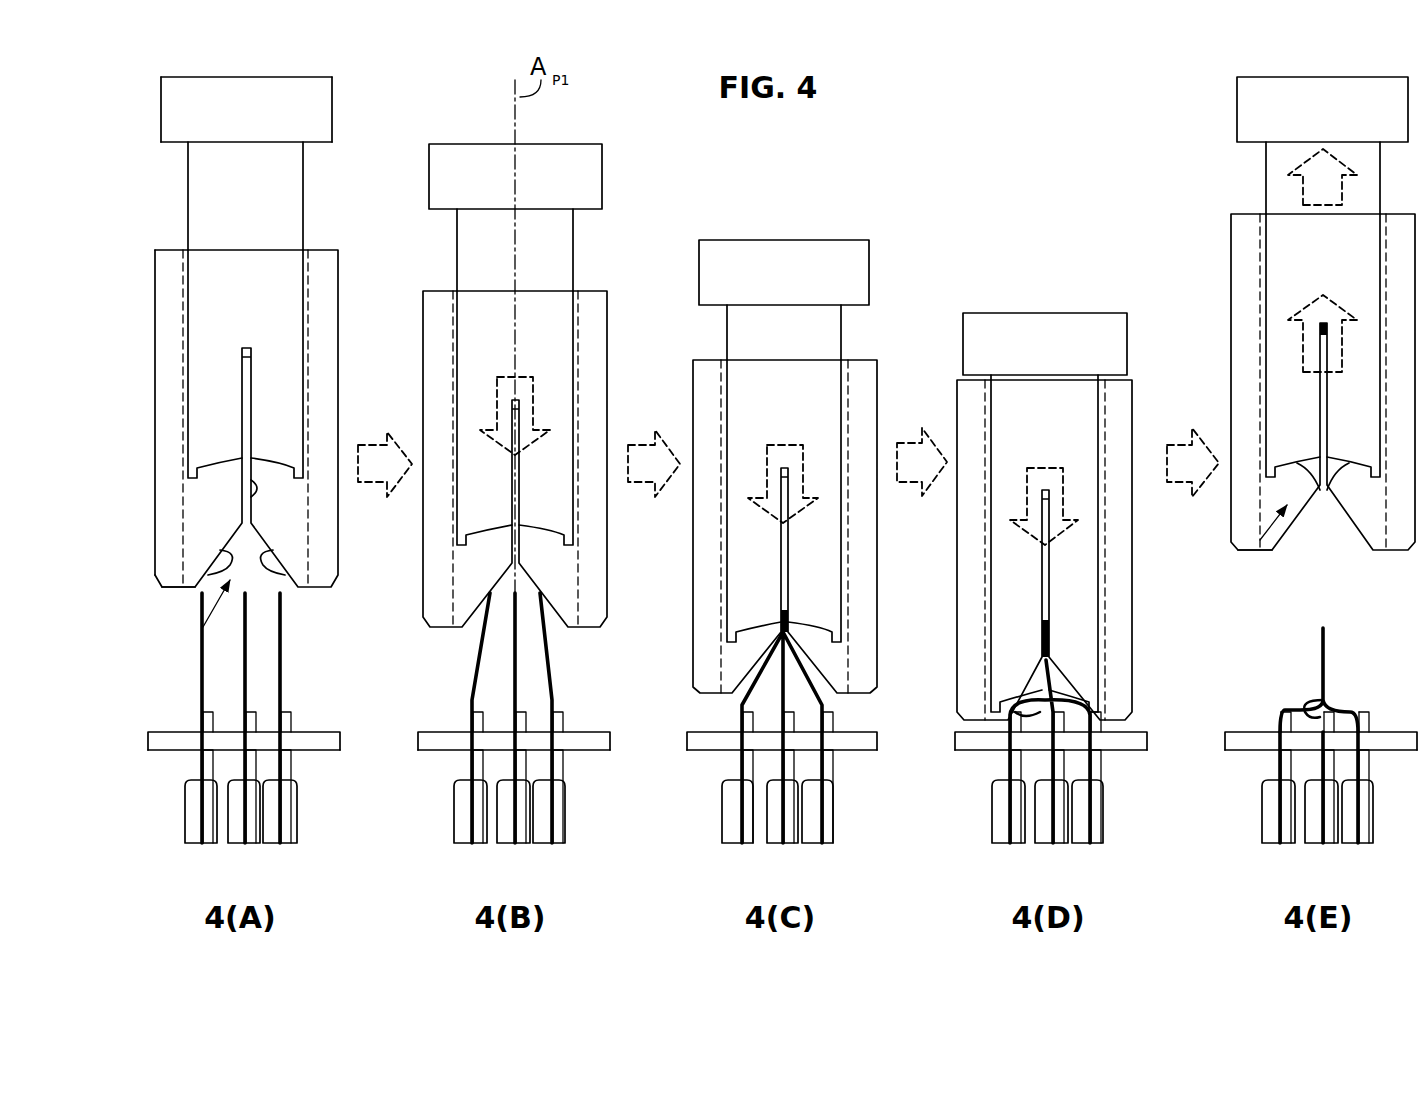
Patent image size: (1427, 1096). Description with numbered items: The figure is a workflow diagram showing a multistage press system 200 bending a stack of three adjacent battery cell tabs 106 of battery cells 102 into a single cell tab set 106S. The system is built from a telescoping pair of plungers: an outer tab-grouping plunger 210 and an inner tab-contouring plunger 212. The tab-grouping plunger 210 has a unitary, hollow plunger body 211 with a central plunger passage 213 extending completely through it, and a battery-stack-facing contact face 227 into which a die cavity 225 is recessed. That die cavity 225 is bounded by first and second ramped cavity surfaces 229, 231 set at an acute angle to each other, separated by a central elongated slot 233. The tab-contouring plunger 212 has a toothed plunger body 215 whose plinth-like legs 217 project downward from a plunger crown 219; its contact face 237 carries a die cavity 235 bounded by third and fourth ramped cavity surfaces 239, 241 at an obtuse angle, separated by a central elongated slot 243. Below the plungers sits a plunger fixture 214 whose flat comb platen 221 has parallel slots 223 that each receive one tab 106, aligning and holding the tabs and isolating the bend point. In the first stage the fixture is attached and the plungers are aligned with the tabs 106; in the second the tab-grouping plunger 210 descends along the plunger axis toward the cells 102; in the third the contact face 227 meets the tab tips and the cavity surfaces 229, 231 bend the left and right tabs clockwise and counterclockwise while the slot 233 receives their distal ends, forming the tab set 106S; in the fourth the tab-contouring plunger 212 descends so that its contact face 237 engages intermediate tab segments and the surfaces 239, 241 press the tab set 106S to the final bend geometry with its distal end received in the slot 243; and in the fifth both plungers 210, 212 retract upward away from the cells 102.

The battery cells 102 is at (185, 845).
The battery cell tabs 106 is at (711, 711).
The cell tab set 106S is at (440, 680).
The multistage press system 200 is at (735, 383).
The tab-grouping plunger 210 is at (736, 467).
The plunger body 211 is at (155, 420).
The tab-contouring plunger 212 is at (732, 210).
The plunger passage 213 is at (195, 530).
The plunger fixture 214 is at (737, 735).
The plunger body 215 is at (160, 124).
The legs 217 is at (188, 160).
The plunger crown 219 is at (272, 77).
The comb platen 221 is at (168, 752).
The slots 223 is at (248, 713).
The die cavities 225 is at (200, 630).
The contact face 227 is at (170, 588).
The first ramped cavity surface 229 is at (218, 574).
The second ramped cavity surface 231 is at (338, 573).
The central elongated slot 233 is at (258, 489).
The die cavities 235 is at (1258, 550).
The contact face 237 is at (1268, 480).
The third ramped cavity surface 239 is at (1314, 497).
The fourth ramped cavity surface 241 is at (1336, 497).
The central elongated slot 243 is at (1323, 335).